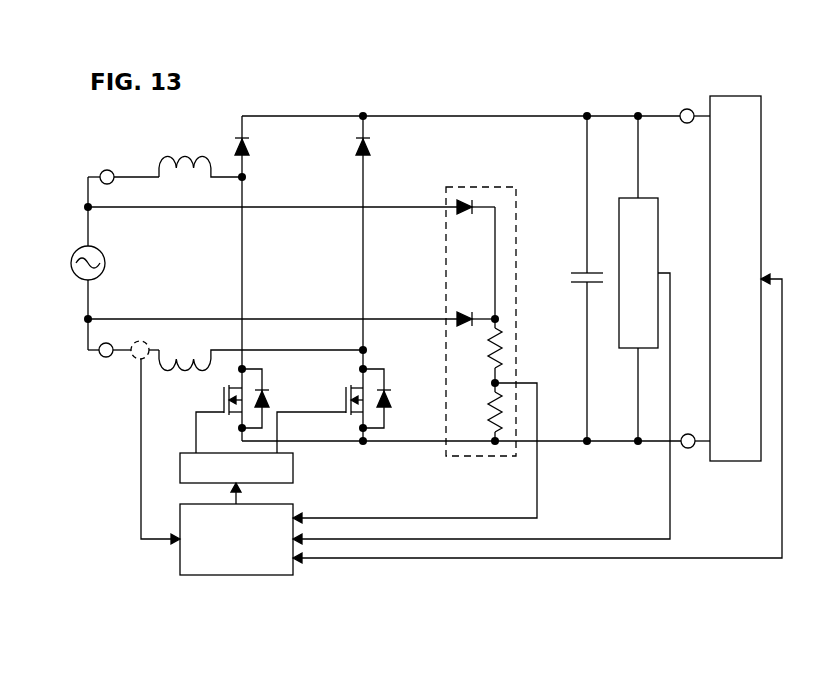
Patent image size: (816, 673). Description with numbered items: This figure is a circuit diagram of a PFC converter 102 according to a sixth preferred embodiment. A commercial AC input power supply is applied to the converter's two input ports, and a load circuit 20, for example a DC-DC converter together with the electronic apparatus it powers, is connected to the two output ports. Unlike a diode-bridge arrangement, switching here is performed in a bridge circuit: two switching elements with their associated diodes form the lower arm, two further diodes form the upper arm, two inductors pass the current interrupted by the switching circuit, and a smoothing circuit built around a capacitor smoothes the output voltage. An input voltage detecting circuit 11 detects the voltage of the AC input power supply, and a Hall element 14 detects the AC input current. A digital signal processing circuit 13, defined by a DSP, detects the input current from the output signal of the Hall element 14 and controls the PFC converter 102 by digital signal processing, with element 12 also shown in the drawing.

The PFC converter 102 is at (531, 63).
The input voltage detecting circuit 11 is at (476, 187).
The current detection unit 12 is at (481, 330).
The digital signal processing circuit 13 is at (237, 575).
The Hall element 14 is at (147, 442).
The load circuit 20 is at (537, 329).